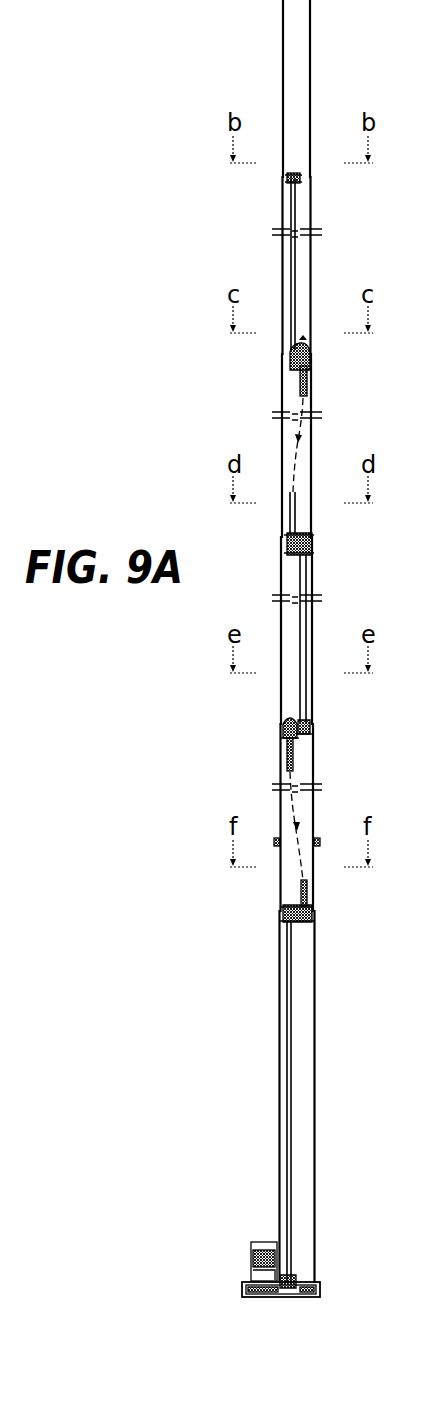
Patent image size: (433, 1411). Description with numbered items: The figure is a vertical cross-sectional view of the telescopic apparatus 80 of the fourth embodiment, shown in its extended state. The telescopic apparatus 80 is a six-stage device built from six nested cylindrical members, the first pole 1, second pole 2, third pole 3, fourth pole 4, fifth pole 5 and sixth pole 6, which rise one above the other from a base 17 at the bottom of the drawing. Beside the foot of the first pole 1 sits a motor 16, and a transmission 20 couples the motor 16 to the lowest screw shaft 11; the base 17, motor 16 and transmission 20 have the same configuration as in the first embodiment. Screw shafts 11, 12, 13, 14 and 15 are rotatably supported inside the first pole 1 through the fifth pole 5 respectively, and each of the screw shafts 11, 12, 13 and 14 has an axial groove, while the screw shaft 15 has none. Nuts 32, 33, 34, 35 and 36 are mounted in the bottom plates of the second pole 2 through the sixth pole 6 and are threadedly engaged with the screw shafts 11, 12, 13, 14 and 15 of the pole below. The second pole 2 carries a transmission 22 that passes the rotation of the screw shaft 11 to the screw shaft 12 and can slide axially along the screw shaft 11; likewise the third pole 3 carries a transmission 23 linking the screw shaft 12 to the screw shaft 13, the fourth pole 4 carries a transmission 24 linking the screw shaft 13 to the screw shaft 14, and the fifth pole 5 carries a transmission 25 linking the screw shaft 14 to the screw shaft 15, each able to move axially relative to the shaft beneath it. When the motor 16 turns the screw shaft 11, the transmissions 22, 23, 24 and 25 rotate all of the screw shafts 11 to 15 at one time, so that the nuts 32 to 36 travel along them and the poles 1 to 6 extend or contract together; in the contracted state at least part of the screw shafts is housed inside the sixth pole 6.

The telescopic apparatus 80 is at (230, 60).
The first pole 1 is at (316, 1040).
The second pole 2 is at (315, 798).
The third pole 3 is at (314, 573).
The fourth pole 4 is at (313, 389).
The fifth pole 5 is at (312, 257).
The sixth pole 6 is at (312, 61).
The screw shaft 11 is at (288, 1138).
The screw shaft 12 is at (287, 760).
The screw shaft 13 is at (300, 572).
The screw shaft 14 is at (300, 385).
The screw shaft 15 is at (291, 207).
The motor 16 is at (250, 1254).
The base 17 is at (322, 1289).
The transmission 20 is at (292, 1280).
The transmission 22 is at (308, 899).
The transmission 23 is at (308, 716).
The transmission 24 is at (303, 531).
The fourth transmission 25 is at (305, 342).
The nut 32 is at (283, 921).
The nut 33 is at (282, 738).
The nut 34 is at (313, 548).
The nut 35 is at (311, 359).
The nut 36 is at (300, 177).